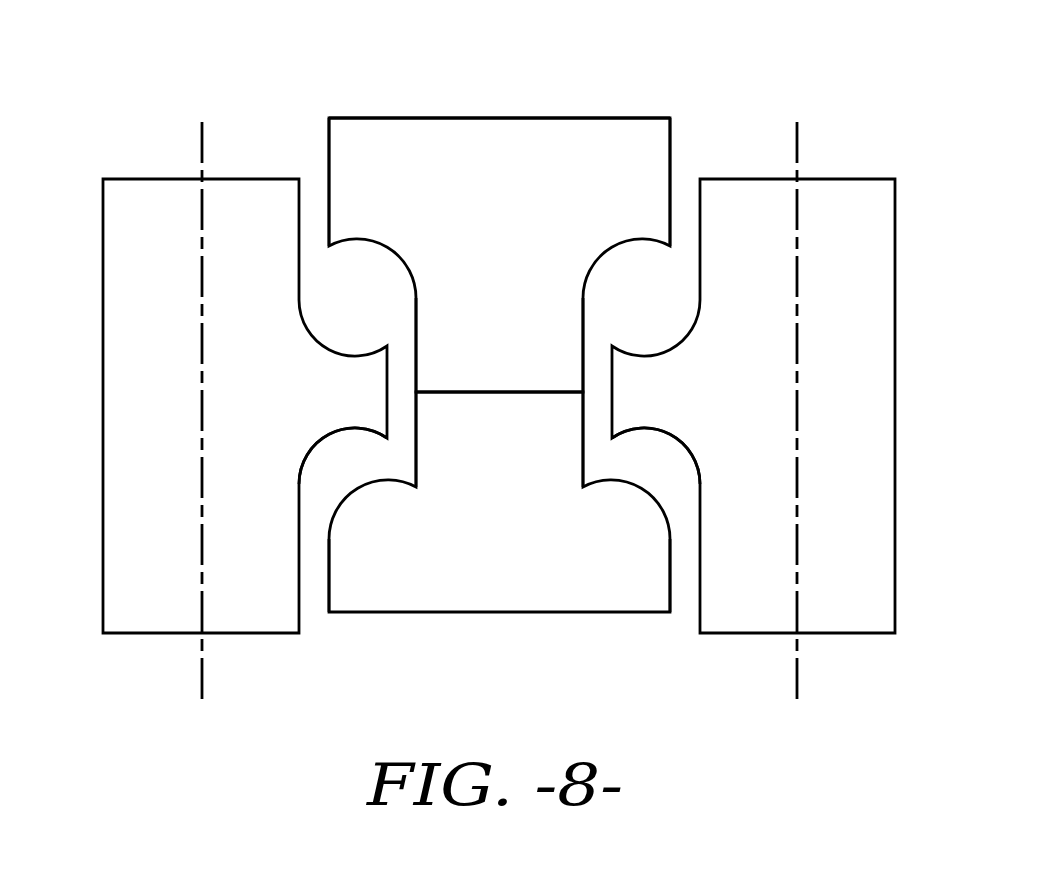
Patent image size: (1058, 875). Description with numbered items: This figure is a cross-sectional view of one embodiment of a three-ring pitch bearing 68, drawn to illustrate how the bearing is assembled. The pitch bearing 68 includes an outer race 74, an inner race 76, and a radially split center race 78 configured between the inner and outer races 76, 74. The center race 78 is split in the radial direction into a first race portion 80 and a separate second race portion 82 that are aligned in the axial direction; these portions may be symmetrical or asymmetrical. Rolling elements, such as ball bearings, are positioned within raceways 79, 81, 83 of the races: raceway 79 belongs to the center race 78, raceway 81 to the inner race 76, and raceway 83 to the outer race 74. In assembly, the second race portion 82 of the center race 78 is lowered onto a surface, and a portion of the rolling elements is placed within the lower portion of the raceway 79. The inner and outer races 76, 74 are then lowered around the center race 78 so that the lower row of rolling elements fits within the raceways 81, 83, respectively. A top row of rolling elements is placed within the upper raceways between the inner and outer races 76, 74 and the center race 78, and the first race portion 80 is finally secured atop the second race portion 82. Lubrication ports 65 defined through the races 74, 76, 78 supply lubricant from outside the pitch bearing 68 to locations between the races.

The pitch bearing 68 is at (501, 366).
The outer race 74 is at (879, 295).
The inner race 76 is at (120, 297).
The center race 78 is at (550, 106).
The first race portion 80 is at (400, 117).
The second race portion 82 is at (522, 613).
The lubrication port 65 is at (313, 187).
The raceway of the center race 79 is at (416, 484).
The raceway of the inner race 81 is at (315, 448).
The raceway of the outer race 83 is at (682, 452).